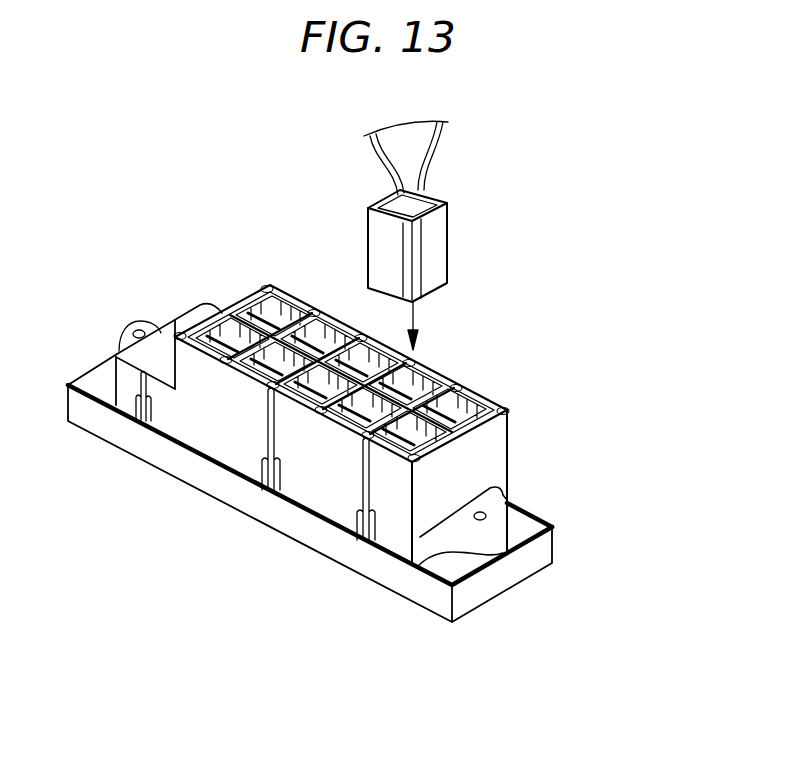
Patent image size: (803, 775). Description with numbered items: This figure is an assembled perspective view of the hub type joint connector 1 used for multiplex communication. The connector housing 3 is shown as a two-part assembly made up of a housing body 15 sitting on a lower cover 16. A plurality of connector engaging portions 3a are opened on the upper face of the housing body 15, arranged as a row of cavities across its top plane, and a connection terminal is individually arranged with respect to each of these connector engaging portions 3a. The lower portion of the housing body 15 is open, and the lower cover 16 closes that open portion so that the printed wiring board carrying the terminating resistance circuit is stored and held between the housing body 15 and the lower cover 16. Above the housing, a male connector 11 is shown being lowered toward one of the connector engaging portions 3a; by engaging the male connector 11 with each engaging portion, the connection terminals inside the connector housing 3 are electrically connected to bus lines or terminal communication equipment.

The hub type joint connector 1 is at (265, 257).
The connector housing 3 is at (647, 415).
The connector engaging portions 3a is at (428, 371).
The male connector 11 is at (432, 244).
The housing body 15 is at (488, 473).
The lower cover 16 is at (538, 559).